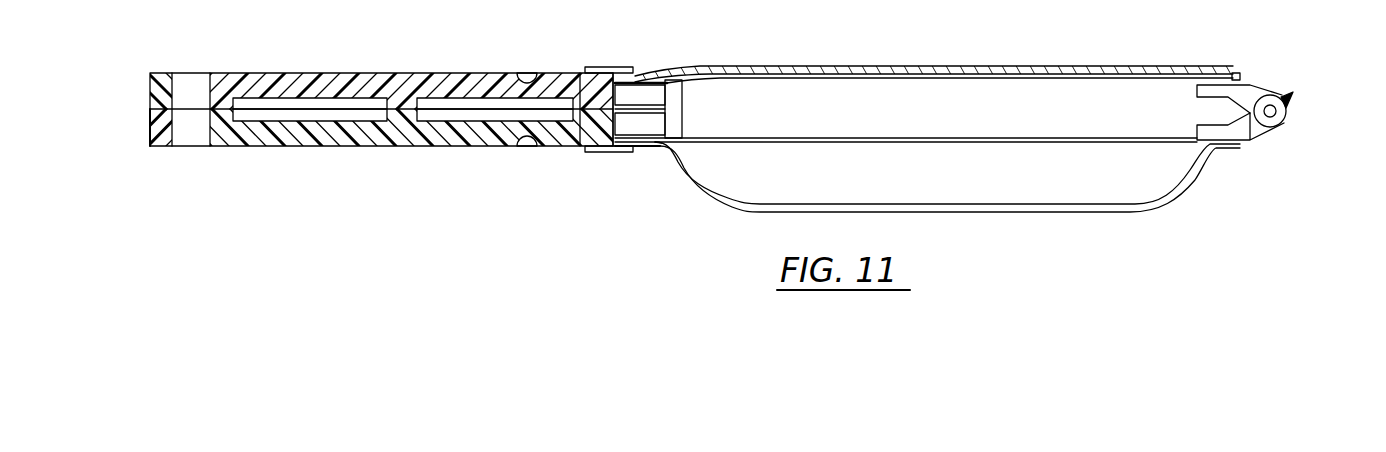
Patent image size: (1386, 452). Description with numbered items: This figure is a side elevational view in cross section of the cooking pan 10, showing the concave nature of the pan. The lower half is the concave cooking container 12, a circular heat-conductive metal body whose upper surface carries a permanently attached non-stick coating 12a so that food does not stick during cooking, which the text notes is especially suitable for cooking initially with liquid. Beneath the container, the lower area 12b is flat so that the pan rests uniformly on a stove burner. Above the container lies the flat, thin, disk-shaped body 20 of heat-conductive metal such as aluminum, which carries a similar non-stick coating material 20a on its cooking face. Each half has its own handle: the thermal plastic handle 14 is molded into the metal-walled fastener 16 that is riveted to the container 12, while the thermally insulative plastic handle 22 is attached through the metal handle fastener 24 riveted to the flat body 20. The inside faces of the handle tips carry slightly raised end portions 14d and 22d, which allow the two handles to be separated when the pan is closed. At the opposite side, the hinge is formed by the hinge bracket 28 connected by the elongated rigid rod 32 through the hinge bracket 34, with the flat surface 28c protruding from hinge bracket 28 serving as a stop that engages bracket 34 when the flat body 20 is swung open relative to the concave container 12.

The cooking pan 10 is at (1070, 64).
The concave cooking container 12 is at (700, 190).
The non-stick coating 12a is at (970, 203).
The lower area 12b is at (970, 213).
The handle 14 is at (445, 147).
The raised end portion 14d is at (155, 147).
The fastener 16 is at (607, 153).
The flat body 20 is at (910, 66).
The coating material 20a is at (918, 79).
The handle 22 is at (335, 72).
The raised end portion 22d is at (157, 72).
The handle fastener 24 is at (610, 70).
The hinge bracket 28 is at (1246, 134).
The flat surface 28c is at (1295, 85).
The rod 32 is at (1276, 114).
The hinge bracket 34 is at (1253, 93).